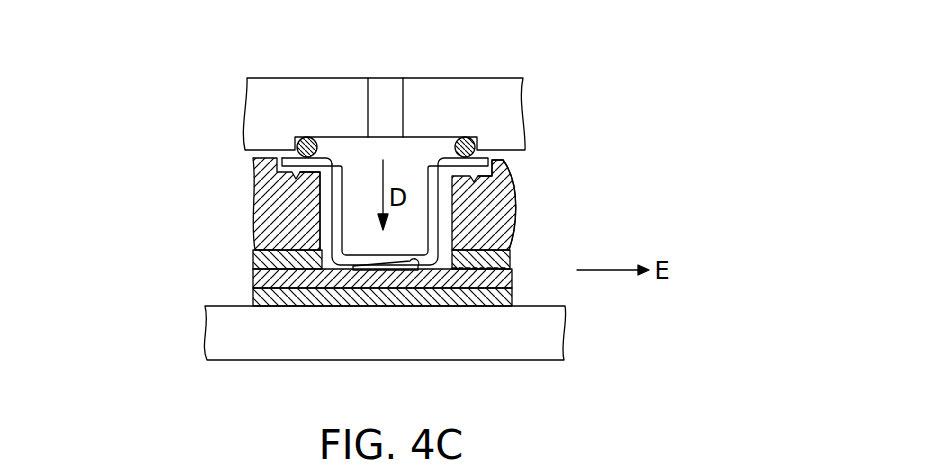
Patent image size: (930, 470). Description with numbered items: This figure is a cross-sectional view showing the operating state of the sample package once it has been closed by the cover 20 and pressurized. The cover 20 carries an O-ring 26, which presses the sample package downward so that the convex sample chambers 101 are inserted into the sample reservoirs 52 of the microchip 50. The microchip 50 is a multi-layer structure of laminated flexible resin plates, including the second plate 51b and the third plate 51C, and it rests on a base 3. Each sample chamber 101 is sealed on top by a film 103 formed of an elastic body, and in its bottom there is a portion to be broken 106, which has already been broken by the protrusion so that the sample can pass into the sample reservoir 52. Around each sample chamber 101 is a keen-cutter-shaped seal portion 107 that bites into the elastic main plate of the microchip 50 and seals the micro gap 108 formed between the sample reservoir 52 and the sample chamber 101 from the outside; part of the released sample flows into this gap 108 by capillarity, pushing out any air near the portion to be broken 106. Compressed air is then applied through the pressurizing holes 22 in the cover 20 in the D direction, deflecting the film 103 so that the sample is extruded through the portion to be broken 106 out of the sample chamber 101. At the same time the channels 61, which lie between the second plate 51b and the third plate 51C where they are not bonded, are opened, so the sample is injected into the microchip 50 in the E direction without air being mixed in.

The substrate / base plate 3 is at (550, 335).
The cover 20 is at (413, 91).
The pressurizing holes 22 is at (387, 88).
The O-ring 26 is at (478, 143).
The microchip 50 is at (537, 207).
The second plate 51b is at (385, 205).
The third plate 51C is at (508, 283).
The sample reservoirs 52 is at (253, 267).
The channels 61 is at (455, 269).
The sample chambers 101 is at (254, 149).
The film 103 is at (343, 157).
The portion to be broken 106 is at (413, 275).
The seal portion 107 is at (517, 180).
The micro gap 108 is at (318, 218).